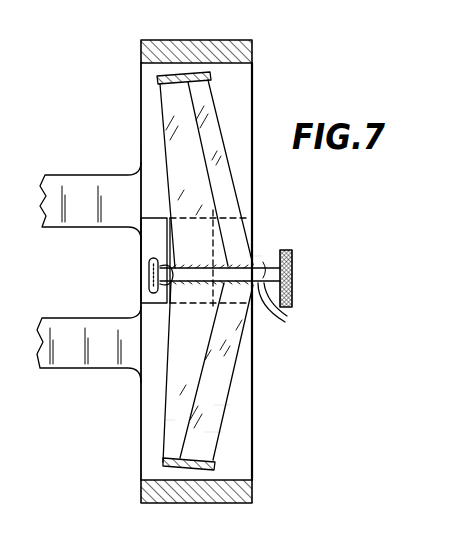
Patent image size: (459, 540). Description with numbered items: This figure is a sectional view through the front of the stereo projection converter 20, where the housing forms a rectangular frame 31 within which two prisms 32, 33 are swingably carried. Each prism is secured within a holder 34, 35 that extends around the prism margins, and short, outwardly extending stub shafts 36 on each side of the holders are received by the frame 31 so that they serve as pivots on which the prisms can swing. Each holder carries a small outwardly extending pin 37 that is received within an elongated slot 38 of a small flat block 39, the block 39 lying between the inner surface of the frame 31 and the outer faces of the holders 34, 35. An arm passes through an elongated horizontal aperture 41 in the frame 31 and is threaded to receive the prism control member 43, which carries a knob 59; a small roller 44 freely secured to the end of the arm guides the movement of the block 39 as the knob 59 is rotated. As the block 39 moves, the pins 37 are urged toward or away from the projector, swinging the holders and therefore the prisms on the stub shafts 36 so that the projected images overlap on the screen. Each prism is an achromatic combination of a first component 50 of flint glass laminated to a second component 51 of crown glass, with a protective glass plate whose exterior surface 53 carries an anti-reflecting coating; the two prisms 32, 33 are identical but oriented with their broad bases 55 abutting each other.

The stereo projection converter 20 is at (100, 150).
The rectangular frame 31 is at (230, 41).
The prism 32 is at (228, 120).
The prism 33 is at (246, 368).
The holder 34 is at (157, 79).
The holder 35 is at (216, 463).
The stub shaft 36 is at (162, 152).
The pin 37 is at (140, 246).
The elongated slot 38 is at (146, 260).
The flat block 39 is at (246, 242).
The elongated horizontal aperture 41 is at (260, 244).
The prism control member 43 is at (266, 260).
The roller 44 is at (142, 300).
The first component of achromatic prism 50 is at (170, 422).
The second component of achromatic prism 51 is at (222, 433).
The exterior surface 53 is at (226, 415).
The broad base 55 is at (285, 308).
The knob 59 is at (293, 256).